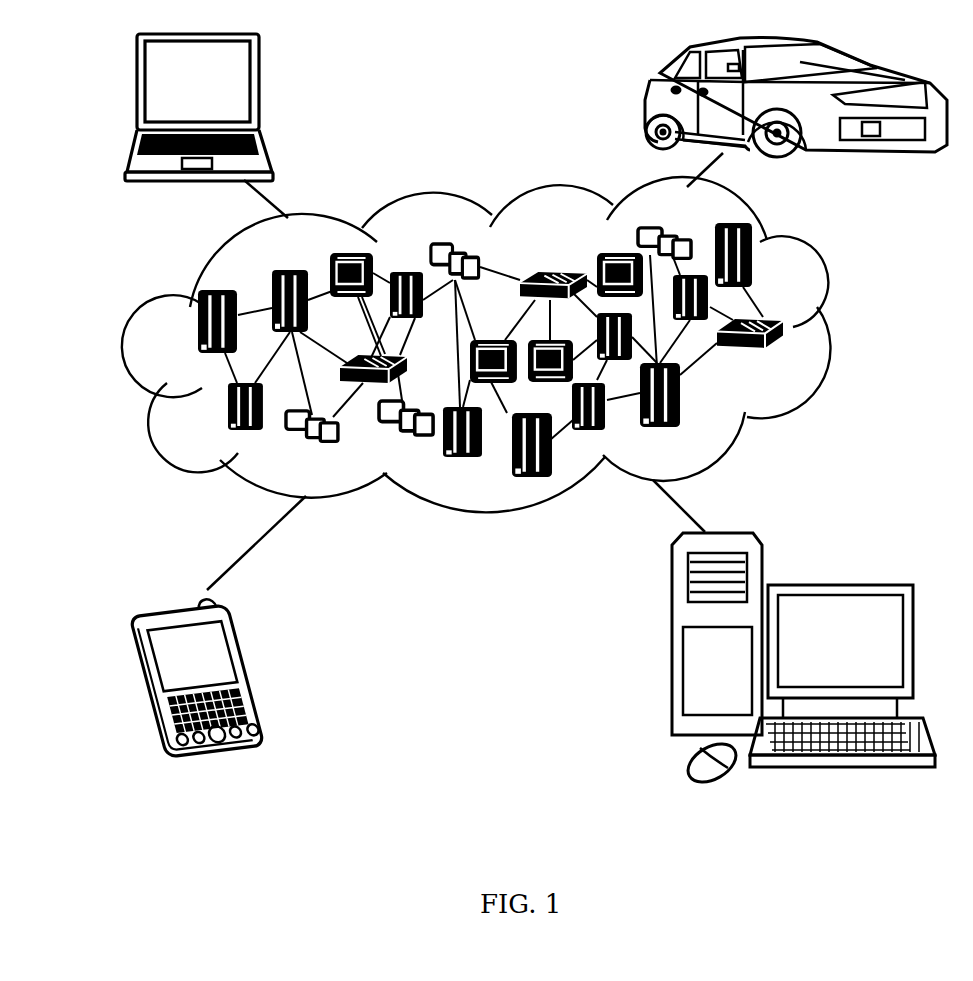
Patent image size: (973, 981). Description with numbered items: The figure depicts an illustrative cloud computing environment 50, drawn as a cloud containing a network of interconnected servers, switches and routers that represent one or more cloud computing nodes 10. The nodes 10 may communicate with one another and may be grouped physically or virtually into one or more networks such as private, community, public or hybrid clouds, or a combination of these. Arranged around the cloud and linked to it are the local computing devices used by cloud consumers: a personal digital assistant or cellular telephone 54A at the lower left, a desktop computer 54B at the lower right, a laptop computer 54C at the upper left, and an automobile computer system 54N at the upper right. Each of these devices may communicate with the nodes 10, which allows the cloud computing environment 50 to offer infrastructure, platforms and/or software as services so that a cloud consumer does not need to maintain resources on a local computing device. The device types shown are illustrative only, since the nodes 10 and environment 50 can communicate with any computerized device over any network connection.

The cloud computing nodes 10 is at (534, 412).
The cloud computing environment 50 is at (840, 331).
The personal digital assistant (PDA) or cellular telephone 54A is at (251, 670).
The desktop computer 54B is at (837, 584).
The laptop computer 54C is at (263, 92).
The automobile computer system 54N is at (647, 107).